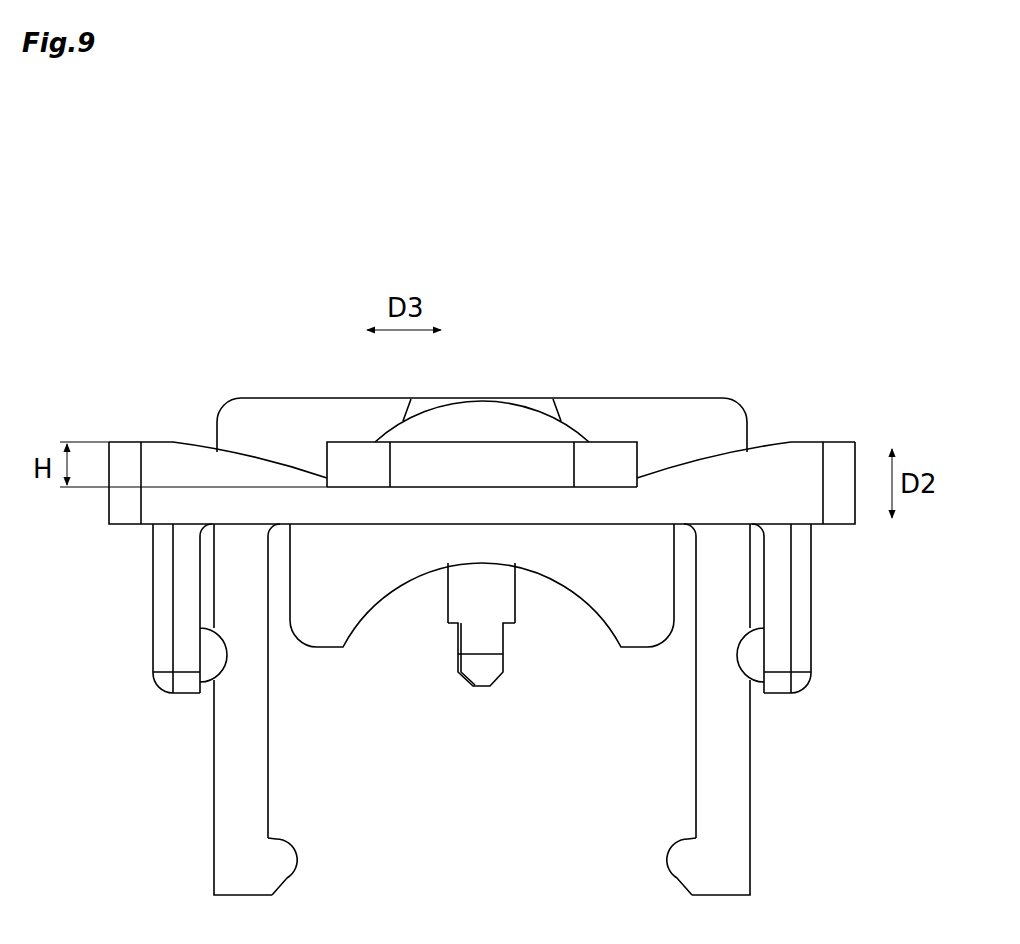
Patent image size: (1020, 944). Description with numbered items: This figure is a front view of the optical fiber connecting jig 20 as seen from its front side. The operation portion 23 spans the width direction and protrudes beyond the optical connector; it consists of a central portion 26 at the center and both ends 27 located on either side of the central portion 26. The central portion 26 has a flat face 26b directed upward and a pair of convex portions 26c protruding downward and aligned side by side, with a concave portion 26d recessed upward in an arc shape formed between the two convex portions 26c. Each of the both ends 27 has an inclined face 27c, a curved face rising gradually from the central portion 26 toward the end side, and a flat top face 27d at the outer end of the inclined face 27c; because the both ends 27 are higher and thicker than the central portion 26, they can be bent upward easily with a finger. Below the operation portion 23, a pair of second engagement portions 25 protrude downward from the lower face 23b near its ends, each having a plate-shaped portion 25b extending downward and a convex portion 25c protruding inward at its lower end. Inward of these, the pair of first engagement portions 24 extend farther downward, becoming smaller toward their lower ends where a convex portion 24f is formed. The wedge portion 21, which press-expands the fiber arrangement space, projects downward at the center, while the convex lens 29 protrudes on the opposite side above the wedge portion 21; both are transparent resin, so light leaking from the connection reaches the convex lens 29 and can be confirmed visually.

The optical fiber connecting jig 20 is at (634, 209).
The wedge portion 21 is at (480, 657).
The operation portion 23 is at (817, 440).
The lower face 23b is at (238, 527).
The first engagement portion 24 is at (234, 852).
The convex portion 24f is at (286, 868).
The second engagement portion 25 is at (150, 631).
The plate-shaped portion 25b is at (180, 582).
The convex portion 25c is at (220, 652).
The central portion 26 is at (500, 502).
The flat face 26b is at (472, 484).
The convex portion 26c is at (325, 642).
The concave portion 26d is at (483, 566).
The both ends 27 is at (122, 463).
The inclined face 27c is at (200, 450).
The top face 27d is at (127, 442).
The convex lens 29 is at (532, 420).